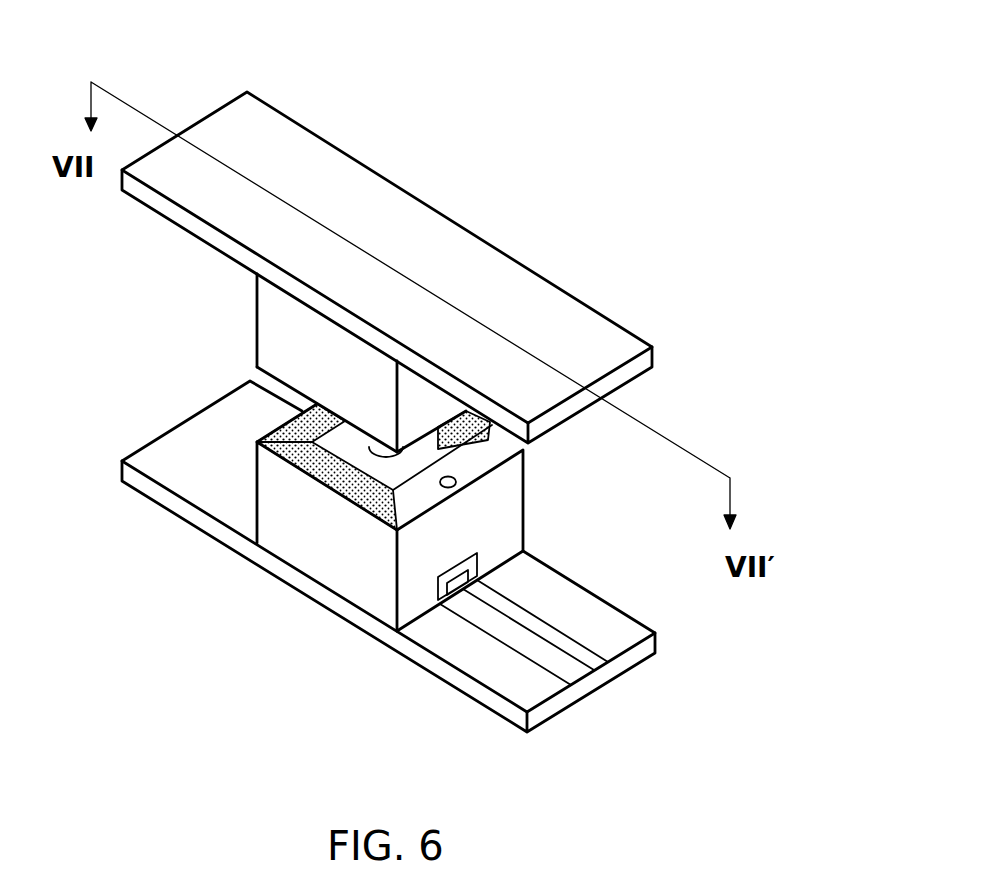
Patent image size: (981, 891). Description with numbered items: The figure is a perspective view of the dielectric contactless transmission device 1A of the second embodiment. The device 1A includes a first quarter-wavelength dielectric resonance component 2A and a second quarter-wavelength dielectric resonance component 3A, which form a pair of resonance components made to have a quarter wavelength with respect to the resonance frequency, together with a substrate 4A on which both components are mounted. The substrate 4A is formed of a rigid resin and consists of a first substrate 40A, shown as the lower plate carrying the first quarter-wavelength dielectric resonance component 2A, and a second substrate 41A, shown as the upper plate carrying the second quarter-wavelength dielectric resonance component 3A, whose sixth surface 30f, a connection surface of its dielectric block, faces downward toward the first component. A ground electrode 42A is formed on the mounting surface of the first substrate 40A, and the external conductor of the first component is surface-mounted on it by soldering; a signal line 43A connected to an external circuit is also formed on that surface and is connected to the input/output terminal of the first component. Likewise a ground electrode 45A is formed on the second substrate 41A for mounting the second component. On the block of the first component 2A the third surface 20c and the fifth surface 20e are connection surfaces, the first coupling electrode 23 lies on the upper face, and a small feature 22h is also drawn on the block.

The dielectric contactless transmission device 1A is at (374, 374).
The substrate 4A is at (387, 252).
The second substrate 41A is at (387, 245).
The ground electrode 45A is at (270, 157).
The second ¼ wavelength dielectric resonance component 3A is at (298, 365).
The sixth surface 30f is at (252, 368).
The first ¼ wavelength dielectric resonance component 2A is at (374, 556).
The first substrate 40A is at (374, 556).
The ground electrode 42A is at (140, 452).
The signal line 43A is at (568, 650).
The fifth surface 20e is at (357, 594).
The third surface 20c is at (399, 634).
The hole 22h is at (457, 481).
The first coupling electrode 23 is at (297, 472).